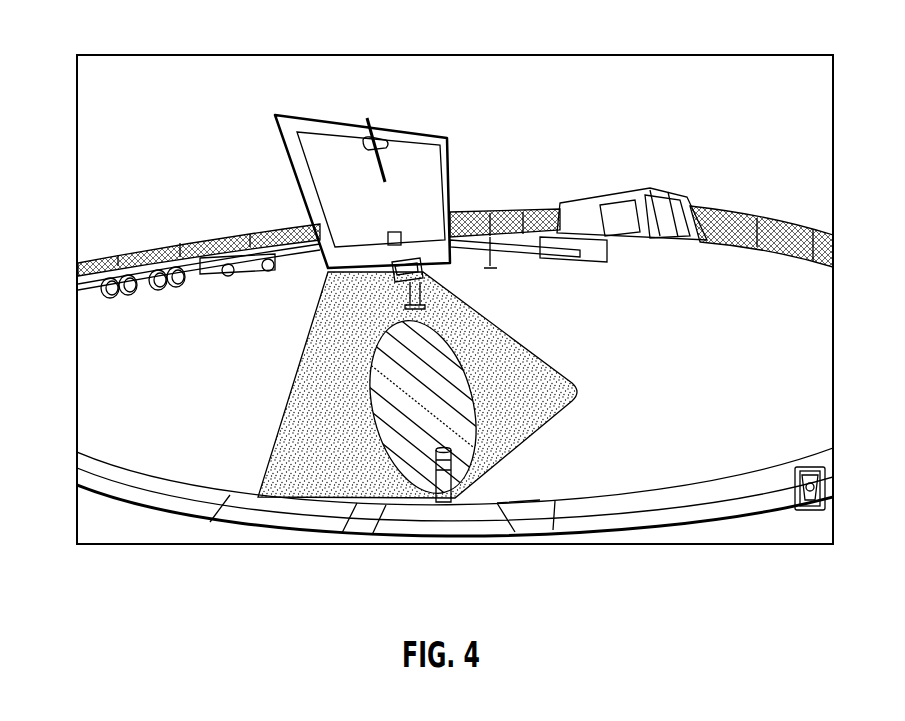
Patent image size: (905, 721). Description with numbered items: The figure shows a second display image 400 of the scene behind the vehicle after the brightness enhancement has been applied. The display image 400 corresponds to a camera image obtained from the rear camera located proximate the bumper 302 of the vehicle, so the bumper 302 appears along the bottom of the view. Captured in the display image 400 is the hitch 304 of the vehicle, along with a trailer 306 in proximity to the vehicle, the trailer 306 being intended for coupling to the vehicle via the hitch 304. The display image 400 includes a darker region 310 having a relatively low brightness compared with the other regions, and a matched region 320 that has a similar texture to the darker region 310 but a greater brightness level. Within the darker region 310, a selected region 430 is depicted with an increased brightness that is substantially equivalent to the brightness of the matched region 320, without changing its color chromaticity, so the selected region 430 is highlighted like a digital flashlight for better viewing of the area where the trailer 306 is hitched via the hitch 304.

The second display image 400 is at (115, 41).
The bumper 302 is at (698, 495).
The hitch 304 is at (447, 505).
The trailer 306 is at (448, 165).
The darker region 310 is at (272, 432).
The matched region 320 is at (608, 369).
The selected region 430 is at (455, 384).